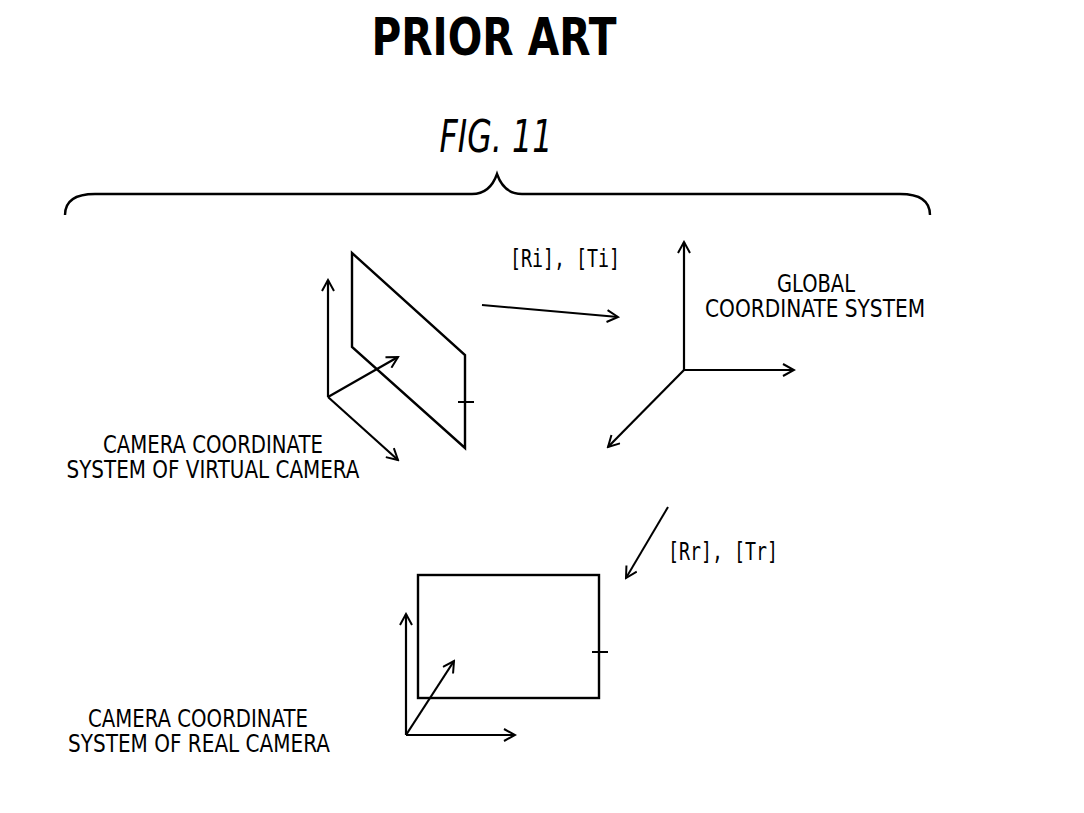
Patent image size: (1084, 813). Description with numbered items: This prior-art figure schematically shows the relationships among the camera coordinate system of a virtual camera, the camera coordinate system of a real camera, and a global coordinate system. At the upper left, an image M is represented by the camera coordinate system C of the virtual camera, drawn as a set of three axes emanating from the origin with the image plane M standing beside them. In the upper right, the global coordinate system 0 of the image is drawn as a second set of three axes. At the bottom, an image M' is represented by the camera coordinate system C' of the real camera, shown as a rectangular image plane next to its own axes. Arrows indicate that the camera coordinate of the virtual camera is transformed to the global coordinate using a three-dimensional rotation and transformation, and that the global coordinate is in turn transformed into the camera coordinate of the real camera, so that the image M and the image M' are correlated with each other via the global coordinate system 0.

The camera coordinate system of the virtual camera C is at (351, 370).
The image represented by the camera coordinate system of the virtual camera M is at (424, 350).
The global coordinate system of the image 0 is at (701, 344).
The camera coordinate system of the real camera C' is at (448, 686).
The image represented by the camera coordinate system of the real camera M' is at (525, 636).